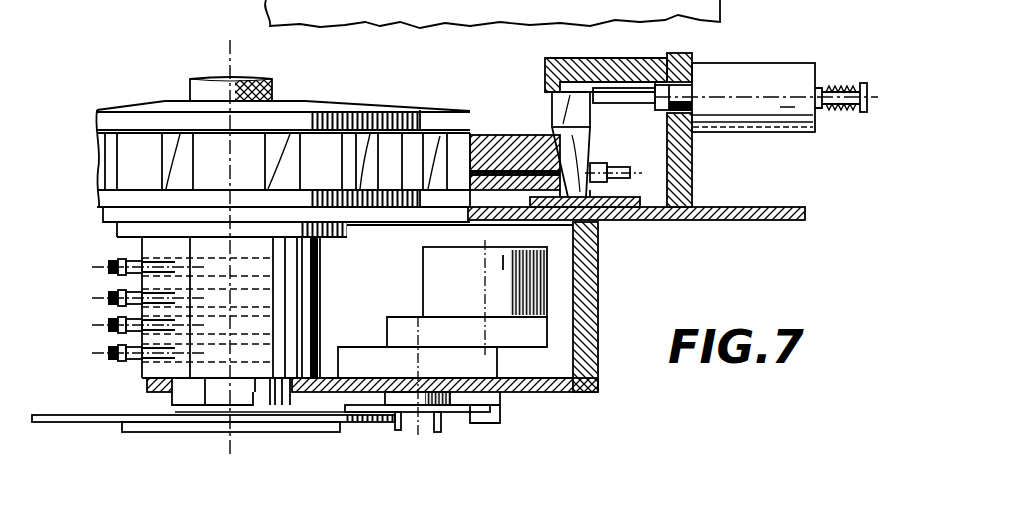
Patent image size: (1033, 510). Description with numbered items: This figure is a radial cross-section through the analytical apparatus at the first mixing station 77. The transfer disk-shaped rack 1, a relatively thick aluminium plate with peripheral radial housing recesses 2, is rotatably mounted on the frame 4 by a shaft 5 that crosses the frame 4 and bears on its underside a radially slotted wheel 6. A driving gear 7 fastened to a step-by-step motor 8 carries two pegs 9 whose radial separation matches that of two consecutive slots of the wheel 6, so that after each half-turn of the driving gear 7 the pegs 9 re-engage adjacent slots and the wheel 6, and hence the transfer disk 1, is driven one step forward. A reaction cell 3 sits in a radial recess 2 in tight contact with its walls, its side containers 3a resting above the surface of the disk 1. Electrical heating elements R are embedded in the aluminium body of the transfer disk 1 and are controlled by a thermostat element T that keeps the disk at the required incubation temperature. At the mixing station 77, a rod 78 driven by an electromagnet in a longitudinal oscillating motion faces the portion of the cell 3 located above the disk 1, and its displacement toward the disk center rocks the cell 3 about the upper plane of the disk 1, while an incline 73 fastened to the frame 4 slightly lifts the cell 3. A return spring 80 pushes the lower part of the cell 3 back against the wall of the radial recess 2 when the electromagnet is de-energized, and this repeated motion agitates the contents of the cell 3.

The transfer disk-shaped rack 1 is at (503, 140).
The electrical heating elements R is at (480, 137).
The radial housing recess 2 is at (560, 143).
The reaction cell 3 is at (575, 147).
The side container 3a is at (557, 110).
The frame 4 is at (766, 222).
The shaft 5 is at (200, 413).
The radially slotted wheel 6 is at (90, 420).
The driving gear 7 is at (458, 413).
The step-by-step motor 8 is at (433, 273).
The pegs 9 is at (398, 430).
The thermostat element T is at (100, 346).
The incline 73 is at (572, 205).
The first mixing station 77 is at (693, 44).
The rod 78 is at (643, 100).
The return spring 80 is at (558, 197).